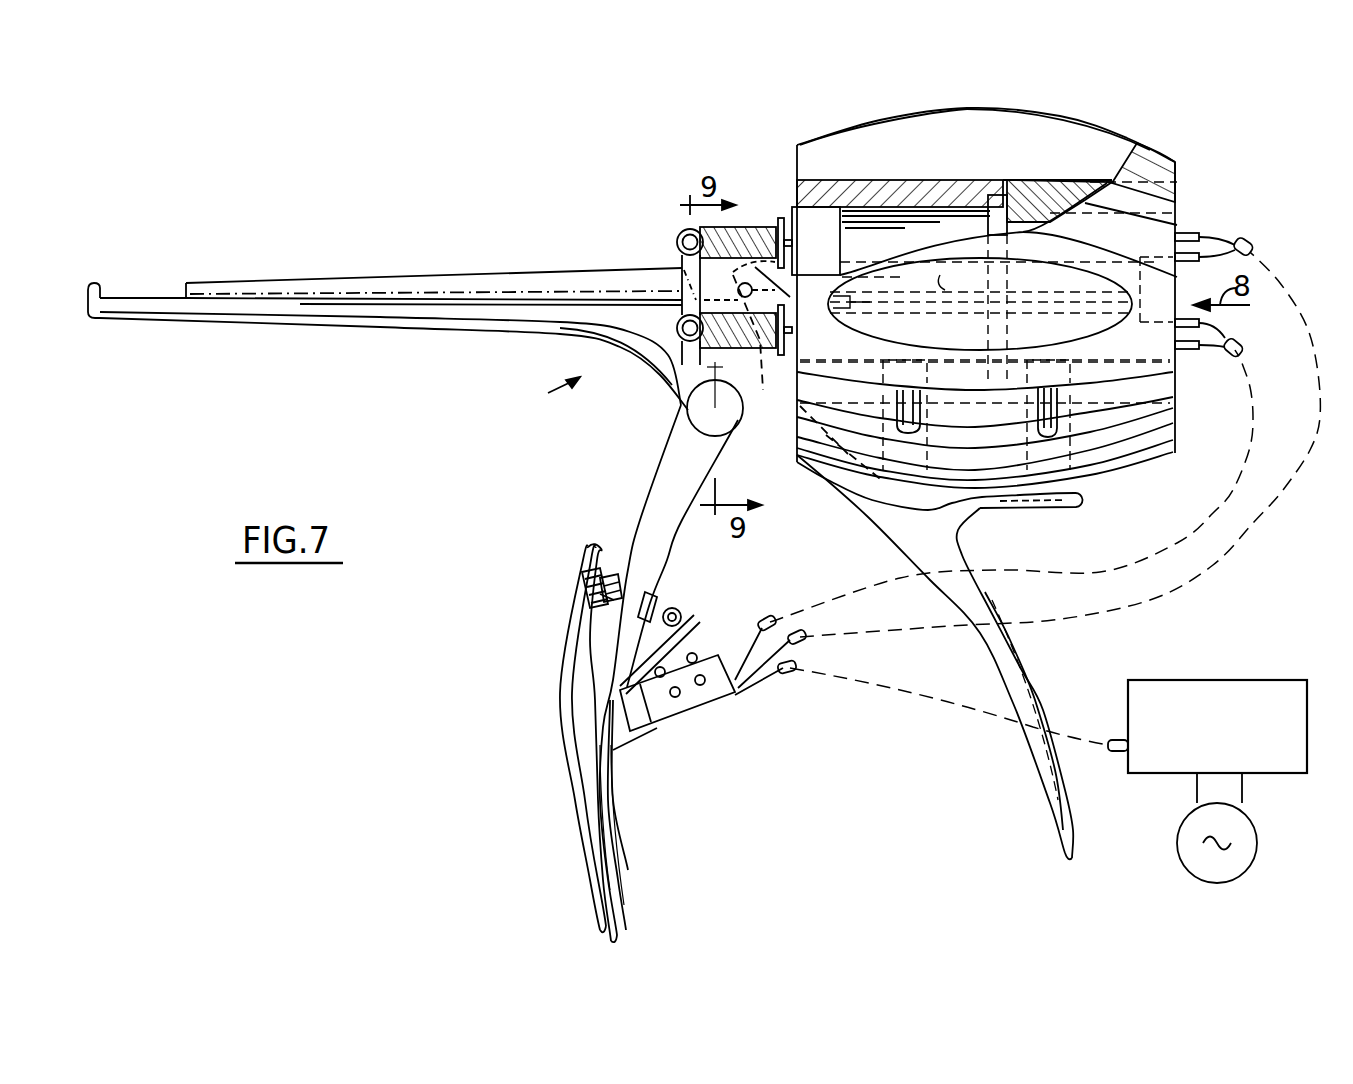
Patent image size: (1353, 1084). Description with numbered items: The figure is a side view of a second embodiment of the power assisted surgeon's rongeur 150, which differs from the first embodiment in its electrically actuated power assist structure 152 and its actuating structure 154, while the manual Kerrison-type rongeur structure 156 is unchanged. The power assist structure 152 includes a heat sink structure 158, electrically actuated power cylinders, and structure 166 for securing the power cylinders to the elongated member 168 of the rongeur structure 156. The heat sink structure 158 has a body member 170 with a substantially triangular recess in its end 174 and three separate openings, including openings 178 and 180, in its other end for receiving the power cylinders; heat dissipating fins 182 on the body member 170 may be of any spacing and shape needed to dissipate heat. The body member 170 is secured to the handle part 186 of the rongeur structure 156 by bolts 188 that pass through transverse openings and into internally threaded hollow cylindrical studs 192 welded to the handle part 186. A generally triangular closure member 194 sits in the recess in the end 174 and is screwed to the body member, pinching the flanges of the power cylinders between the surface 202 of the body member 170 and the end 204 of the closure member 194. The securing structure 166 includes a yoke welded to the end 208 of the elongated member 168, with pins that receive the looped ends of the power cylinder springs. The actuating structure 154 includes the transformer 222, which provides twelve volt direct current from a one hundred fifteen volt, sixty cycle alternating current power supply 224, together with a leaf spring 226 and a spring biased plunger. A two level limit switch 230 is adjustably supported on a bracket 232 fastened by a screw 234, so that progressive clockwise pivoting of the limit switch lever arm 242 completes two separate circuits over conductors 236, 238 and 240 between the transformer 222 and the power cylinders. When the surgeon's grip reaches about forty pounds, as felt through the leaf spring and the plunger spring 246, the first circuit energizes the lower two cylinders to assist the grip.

The power assisted surgeon's rongeur 150 is at (535, 394).
The electrically actuated power assist structure 152 is at (1103, 129).
The actuating structure 154 is at (566, 729).
The manual Kerrison-type rongeur structure 156 is at (478, 332).
The heat sink structure 158 is at (871, 119).
The structure for securing the power cylinders 166 is at (679, 240).
The elongated member 168 is at (337, 280).
The body member 170 is at (952, 107).
The end 174 is at (1180, 188).
The opening 178 is at (840, 182).
The opening 180 is at (852, 360).
The heat dissipating fins 182 is at (795, 193).
The handle part 186 is at (1025, 663).
The bolts 188 is at (1102, 358).
The internally threaded hollow cylindrical studs 192 is at (1093, 467).
The triangular closure member 194 is at (1178, 224).
The surface 202 is at (993, 186).
The end 204 is at (1001, 200).
The end 208 is at (545, 270).
The transformer 222 is at (1215, 680).
The alternating current power supply 224 is at (660, 470).
The leaf spring 226 is at (558, 768).
The limit switch 230 is at (690, 725).
The bracket 232 is at (614, 820).
The screw 234 is at (617, 858).
The conductor 236 is at (987, 724).
The conductor 238 is at (1237, 550).
The conductor 240 is at (1158, 553).
The limit switch lever arm 242 is at (700, 618).
The plunger spring 246 is at (607, 603).